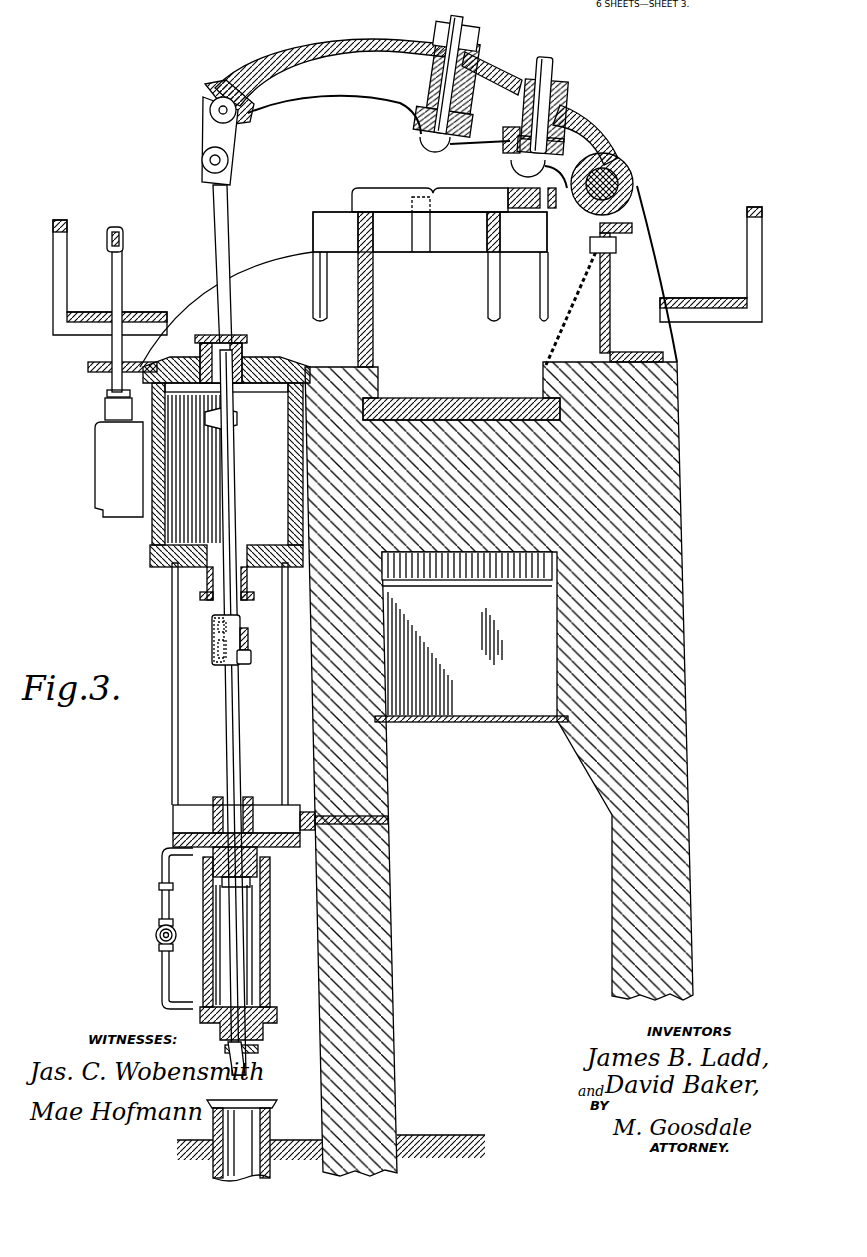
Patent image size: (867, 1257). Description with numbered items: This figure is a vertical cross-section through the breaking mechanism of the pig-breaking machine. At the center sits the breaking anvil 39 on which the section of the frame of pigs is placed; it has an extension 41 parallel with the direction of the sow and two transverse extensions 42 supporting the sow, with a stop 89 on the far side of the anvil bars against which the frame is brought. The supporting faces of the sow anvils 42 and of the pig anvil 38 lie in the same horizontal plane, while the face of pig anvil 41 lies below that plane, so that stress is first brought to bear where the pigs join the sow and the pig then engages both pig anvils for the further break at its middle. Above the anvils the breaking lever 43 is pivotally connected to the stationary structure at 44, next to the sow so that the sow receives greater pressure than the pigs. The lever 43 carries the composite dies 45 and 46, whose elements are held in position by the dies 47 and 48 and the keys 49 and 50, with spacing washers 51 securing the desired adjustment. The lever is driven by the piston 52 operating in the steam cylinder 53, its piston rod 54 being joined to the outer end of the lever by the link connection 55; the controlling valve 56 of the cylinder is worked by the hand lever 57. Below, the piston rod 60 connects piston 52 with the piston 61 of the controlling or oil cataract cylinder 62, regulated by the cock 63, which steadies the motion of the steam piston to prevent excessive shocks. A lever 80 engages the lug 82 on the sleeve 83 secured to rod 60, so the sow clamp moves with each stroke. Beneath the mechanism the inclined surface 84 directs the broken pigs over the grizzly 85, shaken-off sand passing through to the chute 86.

The anvil 38 is at (373, 241).
The breaking anvil 39 is at (487, 241).
The extension 41 is at (487, 222).
The transverse extensions 42 is at (541, 232).
The breaking lever 43 is at (374, 42).
The pivot 44 is at (636, 174).
The composite die 45 is at (428, 146).
The composite die 46 is at (518, 166).
The die 47 is at (432, 80).
The die 48 is at (563, 104).
The key 49 is at (470, 40).
The key 50 is at (553, 70).
The spacing washers 51 is at (508, 128).
The piston 52 is at (245, 414).
The cylinder 53 is at (289, 489).
The piston rod 54 is at (232, 230).
The link connection 55 is at (232, 140).
The controlling valve 56 is at (103, 481).
The hand lever 57 is at (114, 228).
The piston rod 60 is at (240, 740).
The piston 61 is at (262, 870).
The controlling cylinder 62 is at (262, 930).
The cock 63 is at (158, 935).
The lever 80 is at (247, 633).
The lug 82 is at (250, 658).
The sleeve 83 is at (216, 650).
The inclined surface 84 is at (508, 400).
The grizzly 85 is at (472, 575).
The chute 86 is at (471, 657).
The stop 89 is at (421, 242).